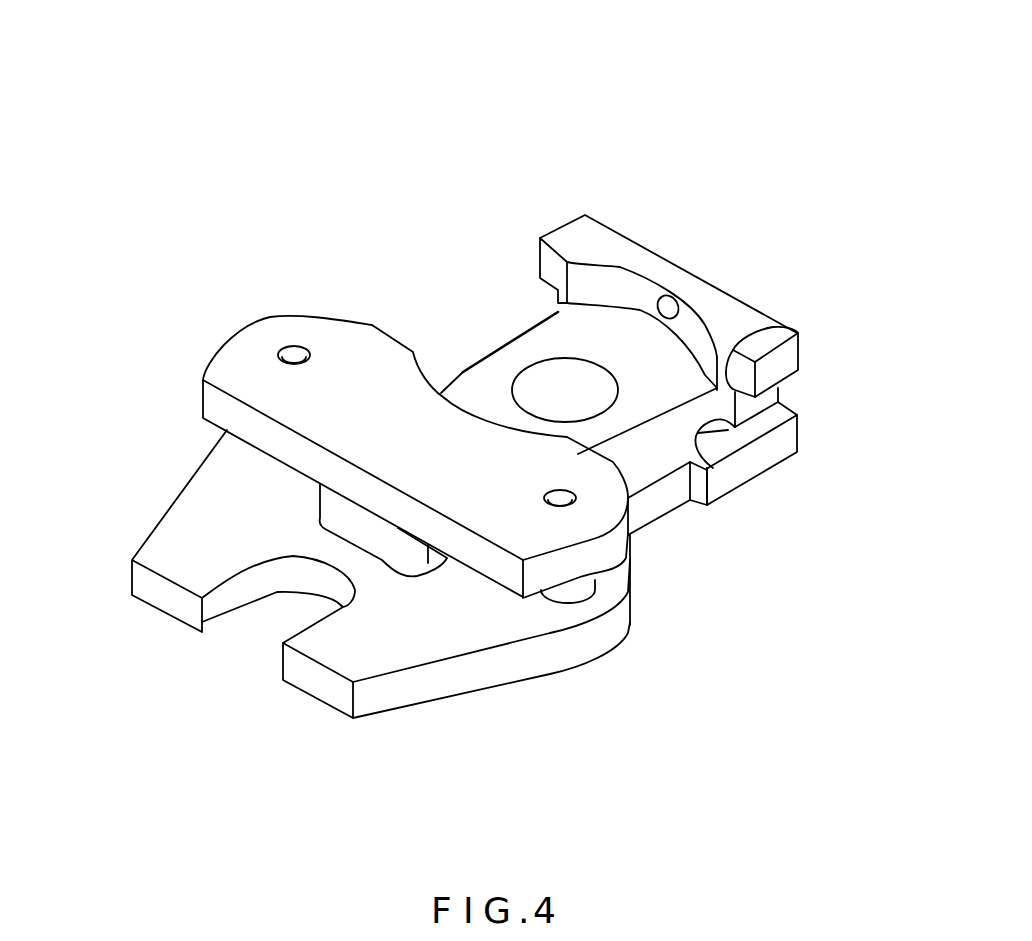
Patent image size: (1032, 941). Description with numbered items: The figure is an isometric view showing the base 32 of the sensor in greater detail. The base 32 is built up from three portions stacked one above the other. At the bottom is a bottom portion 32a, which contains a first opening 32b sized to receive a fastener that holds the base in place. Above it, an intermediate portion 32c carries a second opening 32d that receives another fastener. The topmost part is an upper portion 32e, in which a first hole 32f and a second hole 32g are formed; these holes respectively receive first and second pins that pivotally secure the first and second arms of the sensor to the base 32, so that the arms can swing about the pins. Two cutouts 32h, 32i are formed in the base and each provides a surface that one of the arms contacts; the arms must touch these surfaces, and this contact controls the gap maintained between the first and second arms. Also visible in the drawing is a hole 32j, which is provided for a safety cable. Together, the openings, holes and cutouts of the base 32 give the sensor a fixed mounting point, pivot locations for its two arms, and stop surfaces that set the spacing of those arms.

The base 32 is at (388, 176).
The bottom portion 32a is at (178, 533).
The first opening 32b is at (273, 577).
The intermediate portion 32c is at (468, 383).
The second opening 32d is at (557, 363).
The upper portion 32e is at (241, 365).
The first hole 32f is at (297, 350).
The second hole 32g is at (560, 498).
The cutout 32h is at (780, 326).
The cutout 32i is at (695, 450).
The hole for a safety cable 32j is at (668, 308).